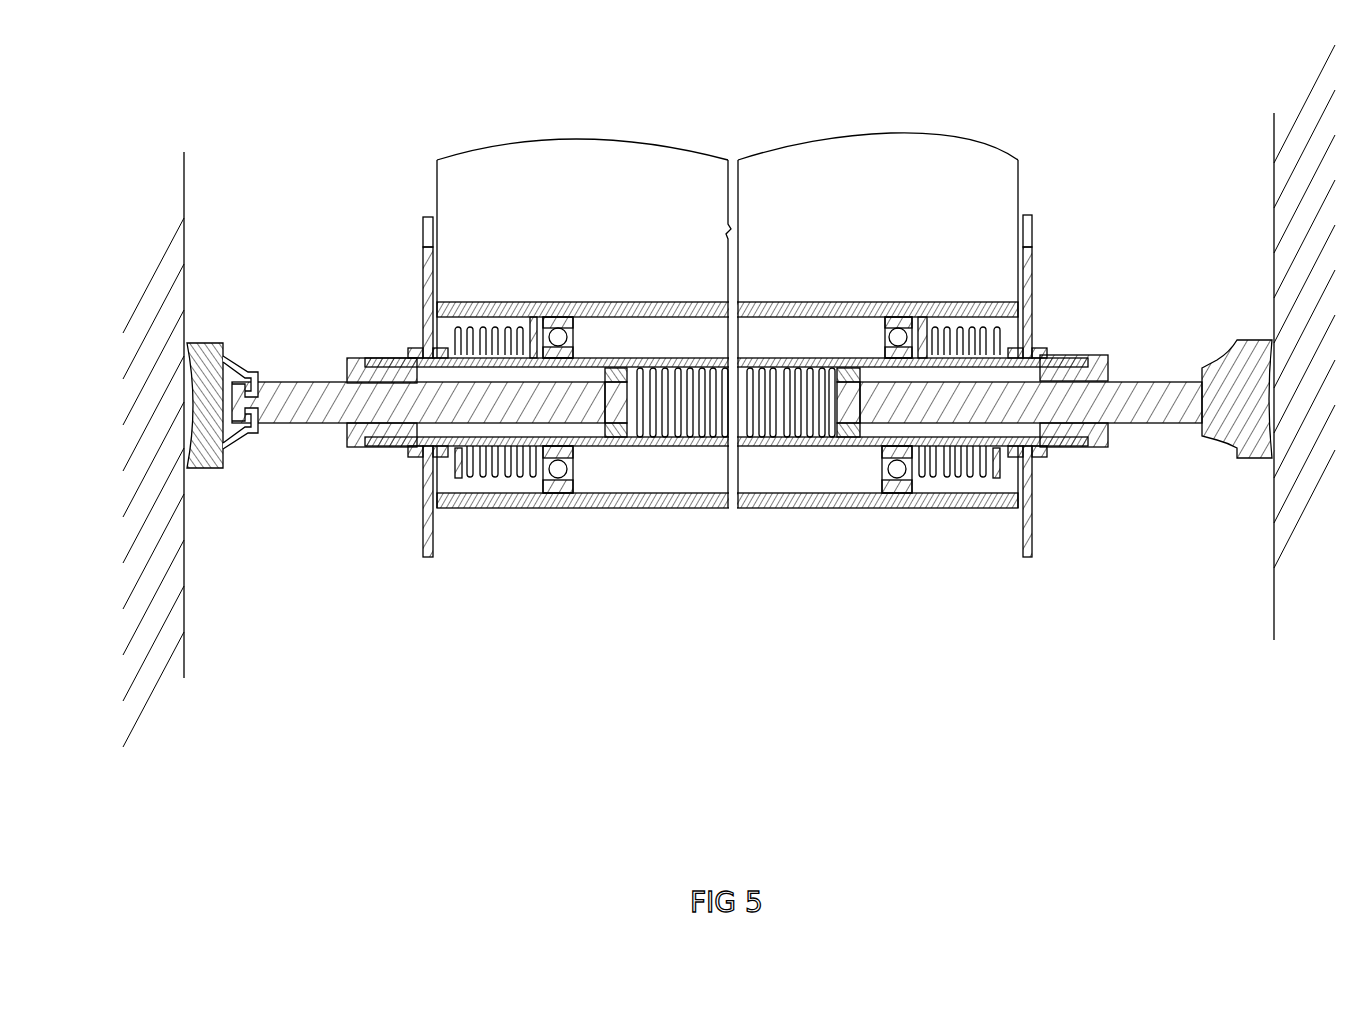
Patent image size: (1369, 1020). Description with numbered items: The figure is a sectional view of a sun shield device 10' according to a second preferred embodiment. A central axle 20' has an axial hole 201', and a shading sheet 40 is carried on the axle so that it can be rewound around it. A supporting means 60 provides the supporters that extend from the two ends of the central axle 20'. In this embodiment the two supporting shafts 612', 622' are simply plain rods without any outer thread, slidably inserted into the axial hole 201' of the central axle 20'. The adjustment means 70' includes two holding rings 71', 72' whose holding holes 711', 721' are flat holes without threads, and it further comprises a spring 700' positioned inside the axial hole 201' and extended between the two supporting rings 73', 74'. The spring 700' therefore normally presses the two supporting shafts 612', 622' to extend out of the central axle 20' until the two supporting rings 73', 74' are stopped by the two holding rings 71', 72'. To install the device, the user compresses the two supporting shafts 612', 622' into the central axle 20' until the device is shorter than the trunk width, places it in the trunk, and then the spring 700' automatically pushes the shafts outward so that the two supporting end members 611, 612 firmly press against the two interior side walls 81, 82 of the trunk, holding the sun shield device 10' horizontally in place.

The sun shield device 10' is at (727, 481).
The central axle 20' is at (726, 453).
The axial hole 201' is at (578, 513).
The shading sheet 40 is at (672, 185).
The supporting means 60 is at (327, 478).
The supporting end member 611 is at (235, 452).
The supporting end member 612 is at (1235, 429).
The supporting shaft 612' is at (297, 450).
The supporting shaft 622' is at (923, 479).
The adjustment means 70' is at (310, 311).
The spring 700' is at (736, 458).
The holding ring 71' is at (413, 387).
The holding hole 711' is at (382, 377).
The holding ring 72' is at (1038, 386).
The holding hole 721' is at (1074, 364).
The supporting ring 73' is at (537, 380).
The supporting ring 74' is at (912, 371).
The interior side wall 81 is at (172, 590).
The interior side wall 82 is at (1280, 525).